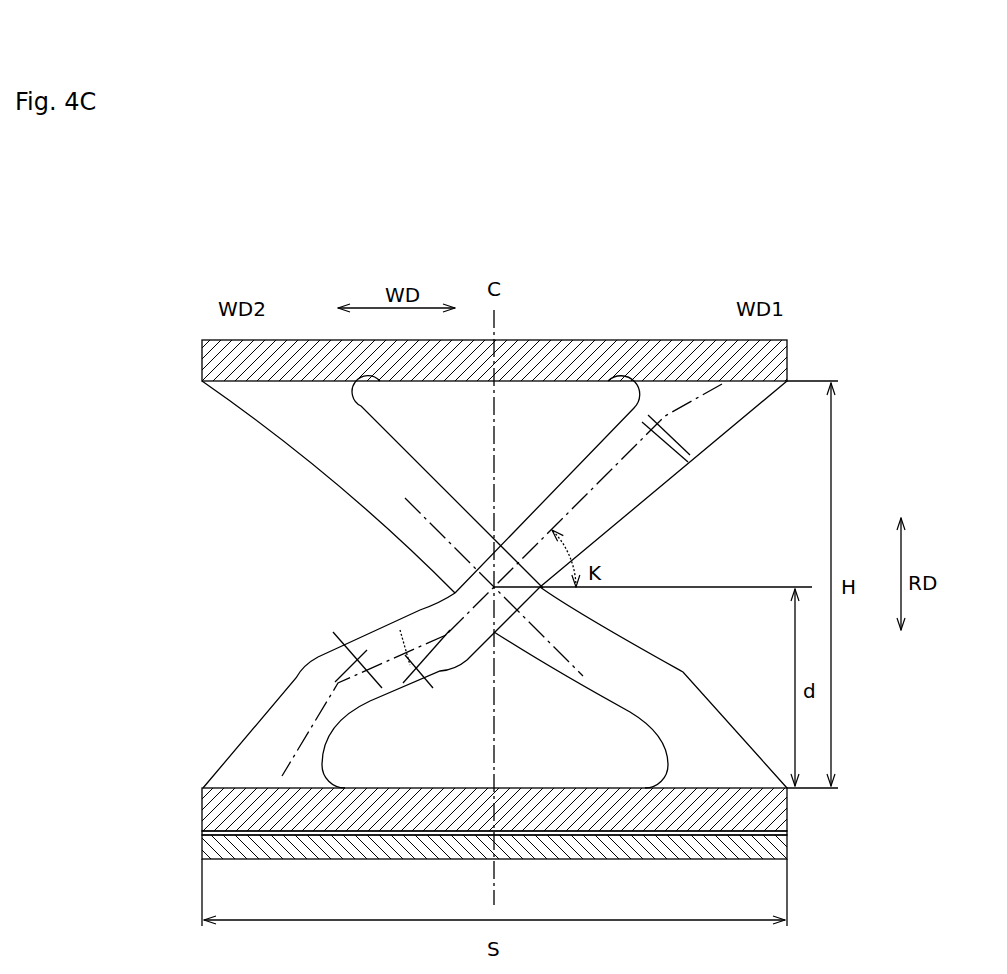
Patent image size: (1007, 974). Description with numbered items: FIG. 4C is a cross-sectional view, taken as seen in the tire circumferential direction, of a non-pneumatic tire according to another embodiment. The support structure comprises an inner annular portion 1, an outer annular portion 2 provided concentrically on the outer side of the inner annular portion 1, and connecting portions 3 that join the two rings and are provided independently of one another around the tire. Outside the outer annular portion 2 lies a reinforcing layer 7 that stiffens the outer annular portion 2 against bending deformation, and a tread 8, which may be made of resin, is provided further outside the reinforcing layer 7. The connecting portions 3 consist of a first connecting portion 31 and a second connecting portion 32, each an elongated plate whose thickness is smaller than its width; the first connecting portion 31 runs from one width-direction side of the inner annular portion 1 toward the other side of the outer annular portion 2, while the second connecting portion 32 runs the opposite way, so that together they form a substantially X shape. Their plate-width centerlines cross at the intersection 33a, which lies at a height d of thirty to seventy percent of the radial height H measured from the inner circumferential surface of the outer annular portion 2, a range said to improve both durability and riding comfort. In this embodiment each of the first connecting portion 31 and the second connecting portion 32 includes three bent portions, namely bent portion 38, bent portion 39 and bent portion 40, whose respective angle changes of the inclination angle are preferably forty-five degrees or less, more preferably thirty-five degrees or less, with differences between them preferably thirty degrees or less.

The inner annular portion 1 is at (790, 354).
The outer annular portion 2 is at (790, 808).
The connecting portions 3 is at (266, 583).
The reinforcing layer 7 is at (790, 830).
The tread 8 is at (790, 838).
The first connecting portion 31 is at (290, 672).
The second connecting portion 32 is at (290, 449).
The intersection 33a is at (497, 590).
The bent portion 38 is at (366, 713).
The bent portion 39 is at (419, 605).
The bent portion 40 is at (638, 505).